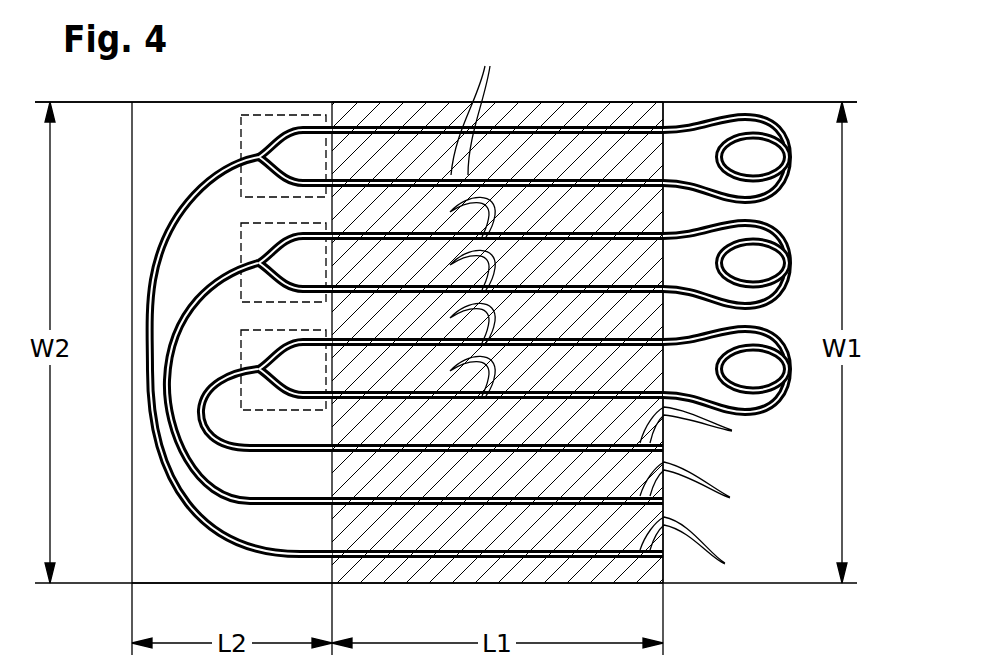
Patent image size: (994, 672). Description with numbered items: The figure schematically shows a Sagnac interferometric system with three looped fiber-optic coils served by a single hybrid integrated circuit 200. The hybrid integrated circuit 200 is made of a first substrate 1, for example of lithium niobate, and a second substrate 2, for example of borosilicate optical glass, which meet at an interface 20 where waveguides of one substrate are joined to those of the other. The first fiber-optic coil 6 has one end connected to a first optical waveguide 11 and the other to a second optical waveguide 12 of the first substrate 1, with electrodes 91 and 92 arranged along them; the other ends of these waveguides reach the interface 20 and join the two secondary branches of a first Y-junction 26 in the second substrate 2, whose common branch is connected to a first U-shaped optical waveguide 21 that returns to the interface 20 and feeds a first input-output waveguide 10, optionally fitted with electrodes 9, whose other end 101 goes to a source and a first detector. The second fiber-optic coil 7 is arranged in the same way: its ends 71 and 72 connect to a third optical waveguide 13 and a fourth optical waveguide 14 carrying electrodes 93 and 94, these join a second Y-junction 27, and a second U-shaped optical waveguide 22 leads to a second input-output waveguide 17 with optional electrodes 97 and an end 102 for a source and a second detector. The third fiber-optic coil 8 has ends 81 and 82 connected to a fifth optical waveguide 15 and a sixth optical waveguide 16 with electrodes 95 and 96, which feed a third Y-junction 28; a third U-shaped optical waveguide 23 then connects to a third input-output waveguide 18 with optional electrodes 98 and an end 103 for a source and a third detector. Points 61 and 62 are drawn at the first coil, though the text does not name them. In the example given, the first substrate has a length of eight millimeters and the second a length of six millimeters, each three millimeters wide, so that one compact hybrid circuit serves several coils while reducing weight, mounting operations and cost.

The first substrate 1 is at (378, 584).
The second substrate 2 is at (203, 584).
The interface 20 is at (332, 571).
The sixth optical waveguide 16 is at (527, 127).
The fifth optical waveguide 15 is at (620, 143).
The fourth optical waveguide 14 is at (620, 197).
The third optical waveguide 13 is at (620, 250).
The second optical waveguide 12 is at (620, 303).
The first optical waveguide 11 is at (620, 357).
The first input-output waveguide 10 is at (575, 410).
The second input-output waveguide 17 is at (575, 463).
The third input-output waveguide 18 is at (575, 516).
The end of the third fiber-optic coil 82 is at (665, 129).
The end of the third fiber-optic coil 81 is at (664, 183).
The end of the second fiber-optic coil 72 is at (664, 237).
The end of the second fiber-optic coil 71 is at (664, 290).
The optical fiber sheet 62 is at (664, 342).
The optical fiber sheet 61 is at (664, 395).
The end of the first input-output waveguide 101 is at (664, 447).
The end of the second input-output waveguide 102 is at (664, 500).
The end of the third input-output waveguide 103 is at (664, 553).
The third fiber-optic coil 8 is at (737, 140).
The second fiber-optic coil 7 is at (737, 246).
The first fiber-optic coil 6 is at (737, 351).
The third Y-junction 28 is at (290, 114).
The second Y-junction 27 is at (240, 232).
The first Y-junction 26 is at (240, 340).
The third U-shaped optical waveguide 23 is at (195, 522).
The second U-shaped optical waveguide 22 is at (200, 490).
The first U-shaped optical waveguide 21 is at (205, 433).
The electrodes 96 is at (397, 126).
The electrodes 95 is at (476, 105).
The electrodes 94 is at (450, 217).
The electrodes 93 is at (450, 270).
The electrodes 92 is at (450, 323).
The electrodes 91 is at (450, 376).
The electrodes 9 is at (696, 426).
The electrodes 97 is at (704, 487).
The electrodes 98 is at (700, 547).
The hybrid integrated circuit 200 is at (617, 75).